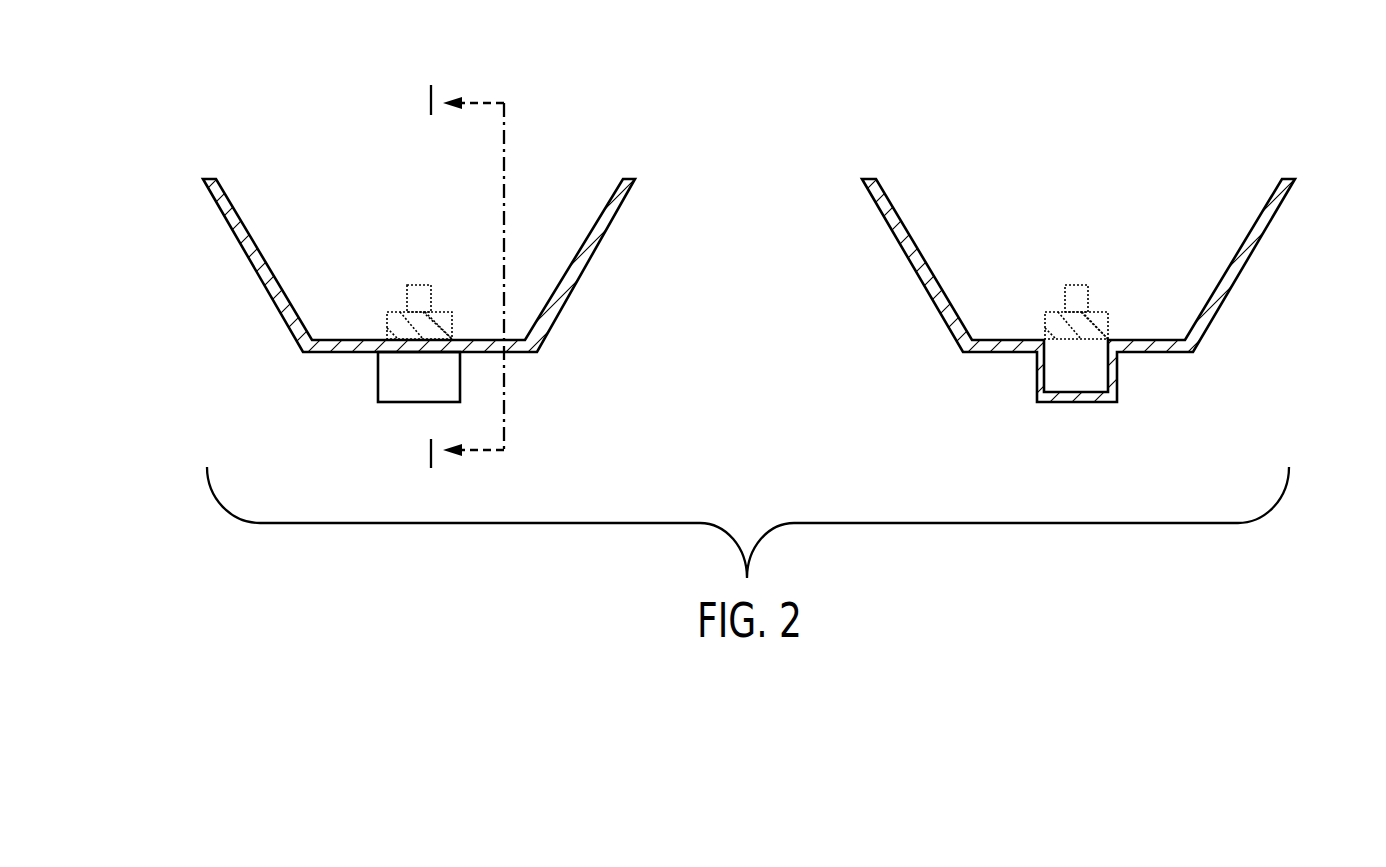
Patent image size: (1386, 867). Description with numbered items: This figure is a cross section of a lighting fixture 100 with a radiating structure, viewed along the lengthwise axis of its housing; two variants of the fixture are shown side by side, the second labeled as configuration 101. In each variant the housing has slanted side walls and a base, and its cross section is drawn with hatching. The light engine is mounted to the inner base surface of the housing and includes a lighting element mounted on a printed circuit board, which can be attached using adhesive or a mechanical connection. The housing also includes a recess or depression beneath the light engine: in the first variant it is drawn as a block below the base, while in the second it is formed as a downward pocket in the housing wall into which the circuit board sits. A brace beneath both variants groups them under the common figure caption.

The lighting fixture 100 is at (174, 134).
The second luminaire configuration 101 is at (832, 134).